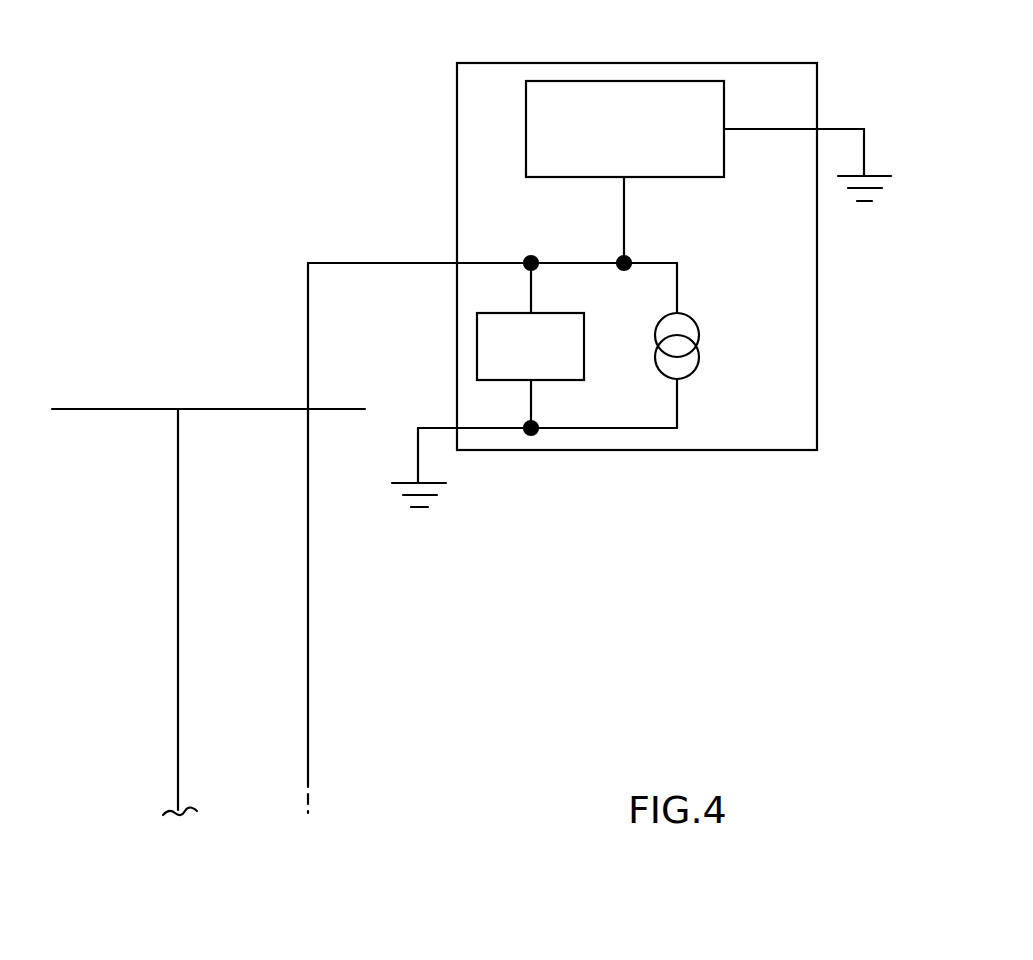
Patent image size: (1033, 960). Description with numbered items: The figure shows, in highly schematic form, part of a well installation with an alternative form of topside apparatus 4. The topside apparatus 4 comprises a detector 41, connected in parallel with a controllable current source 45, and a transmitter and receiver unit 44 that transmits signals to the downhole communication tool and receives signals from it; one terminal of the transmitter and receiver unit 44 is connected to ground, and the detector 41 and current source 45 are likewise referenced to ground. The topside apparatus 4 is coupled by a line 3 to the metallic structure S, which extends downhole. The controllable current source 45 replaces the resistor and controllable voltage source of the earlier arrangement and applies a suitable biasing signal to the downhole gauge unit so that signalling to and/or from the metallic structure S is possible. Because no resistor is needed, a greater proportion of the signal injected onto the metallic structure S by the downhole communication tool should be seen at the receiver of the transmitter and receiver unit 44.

The topside apparatus 4 is at (490, 137).
The transmitter and receiver unit 44 is at (708, 105).
The detector 41 is at (566, 372).
The controllable current source 45 is at (693, 343).
The connection line 3 is at (308, 637).
The metallic structure S is at (178, 625).